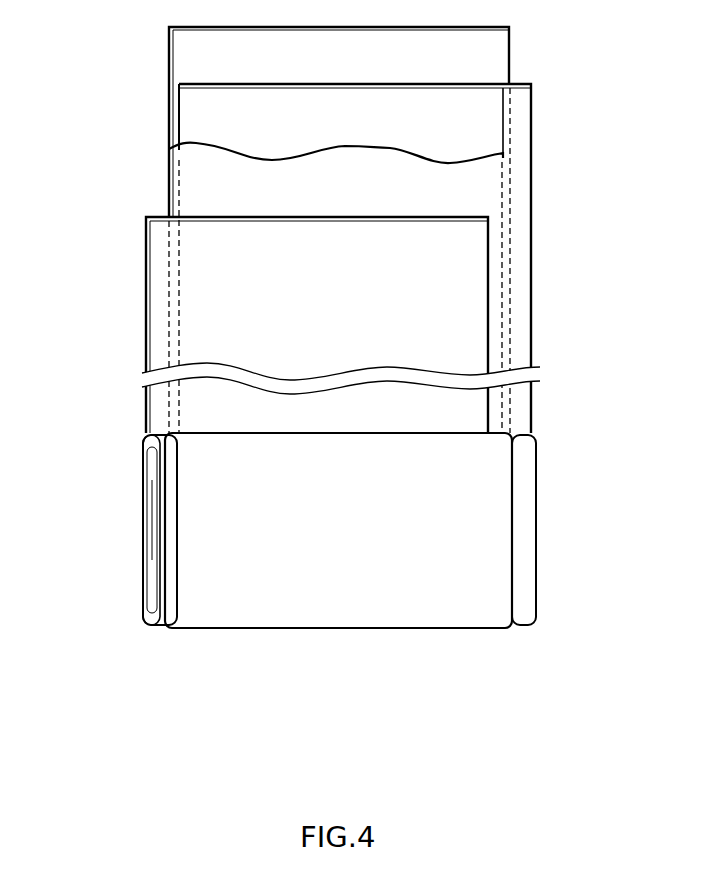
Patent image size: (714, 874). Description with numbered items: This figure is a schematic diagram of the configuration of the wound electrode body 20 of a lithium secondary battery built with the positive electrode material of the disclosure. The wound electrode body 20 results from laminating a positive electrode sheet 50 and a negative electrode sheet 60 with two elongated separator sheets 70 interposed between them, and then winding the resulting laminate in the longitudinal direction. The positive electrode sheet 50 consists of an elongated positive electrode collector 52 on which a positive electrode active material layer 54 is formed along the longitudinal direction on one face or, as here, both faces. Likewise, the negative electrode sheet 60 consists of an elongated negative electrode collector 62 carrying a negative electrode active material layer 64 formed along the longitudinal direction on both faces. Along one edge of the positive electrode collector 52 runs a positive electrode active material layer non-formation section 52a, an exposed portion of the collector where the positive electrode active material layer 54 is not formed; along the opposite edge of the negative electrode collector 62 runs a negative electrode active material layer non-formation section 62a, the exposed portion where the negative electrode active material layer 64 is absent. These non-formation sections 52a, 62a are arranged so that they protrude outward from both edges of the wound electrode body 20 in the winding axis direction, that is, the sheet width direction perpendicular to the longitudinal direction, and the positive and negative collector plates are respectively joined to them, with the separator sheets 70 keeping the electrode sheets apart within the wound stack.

The wound electrode body 20 is at (403, 607).
The positive electrode sheet 50 is at (250, 421).
The positive electrode collector 52 is at (146, 357).
The positive electrode active material layer non-formation section 52a is at (167, 522).
The positive electrode active material layer 54 is at (207, 238).
The negative electrode sheet 60 is at (413, 351).
The negative electrode collector 62 is at (533, 266).
The negative electrode active material layer non-formation section 62a is at (518, 235).
The negative electrode active material layer 64 is at (497, 110).
The separator sheet 70 is at (190, 45).